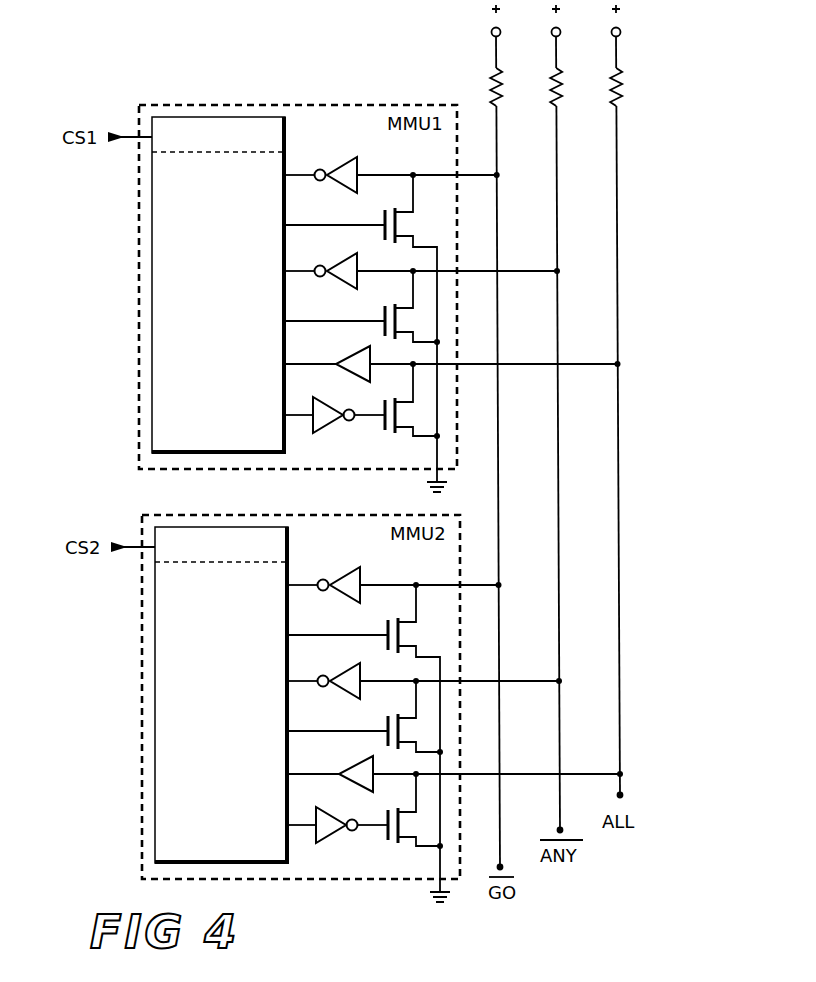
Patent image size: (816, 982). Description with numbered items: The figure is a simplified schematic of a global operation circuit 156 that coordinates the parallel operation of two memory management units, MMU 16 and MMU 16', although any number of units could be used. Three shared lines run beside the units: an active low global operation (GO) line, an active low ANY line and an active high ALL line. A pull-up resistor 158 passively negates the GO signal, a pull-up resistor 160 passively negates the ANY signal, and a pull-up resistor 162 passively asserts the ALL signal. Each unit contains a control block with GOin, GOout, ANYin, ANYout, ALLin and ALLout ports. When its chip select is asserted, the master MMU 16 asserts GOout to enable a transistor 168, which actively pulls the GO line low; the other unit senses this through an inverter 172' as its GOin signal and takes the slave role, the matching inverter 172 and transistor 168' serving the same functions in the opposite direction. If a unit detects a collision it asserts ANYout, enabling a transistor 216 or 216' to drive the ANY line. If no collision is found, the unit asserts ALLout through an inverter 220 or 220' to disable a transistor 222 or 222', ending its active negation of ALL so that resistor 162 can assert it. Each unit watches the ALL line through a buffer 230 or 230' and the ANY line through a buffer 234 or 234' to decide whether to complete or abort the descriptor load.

The MMU 16 is at (192, 285).
The MMU 16' is at (188, 695).
The global operation circuit 156 is at (286, 80).
The pull-up resistor 158 is at (485, 88).
The pull-up resistor 160 is at (547, 88).
The pull-up resistor 162 is at (628, 88).
The transistor 168 is at (347, 220).
The transistor 168' is at (350, 630).
The inverter 172 is at (328, 159).
The inverter 172' is at (331, 569).
The transistor 216 is at (346, 317).
The transistor 216' is at (349, 727).
The inverter 220 is at (327, 429).
The inverter 220' is at (330, 839).
The transistor 222 is at (377, 430).
The transistor 222' is at (382, 840).
The buffer 230 is at (334, 358).
The buffer 230' is at (337, 768).
The buffer 234 is at (328, 262).
The buffer 234' is at (331, 672).